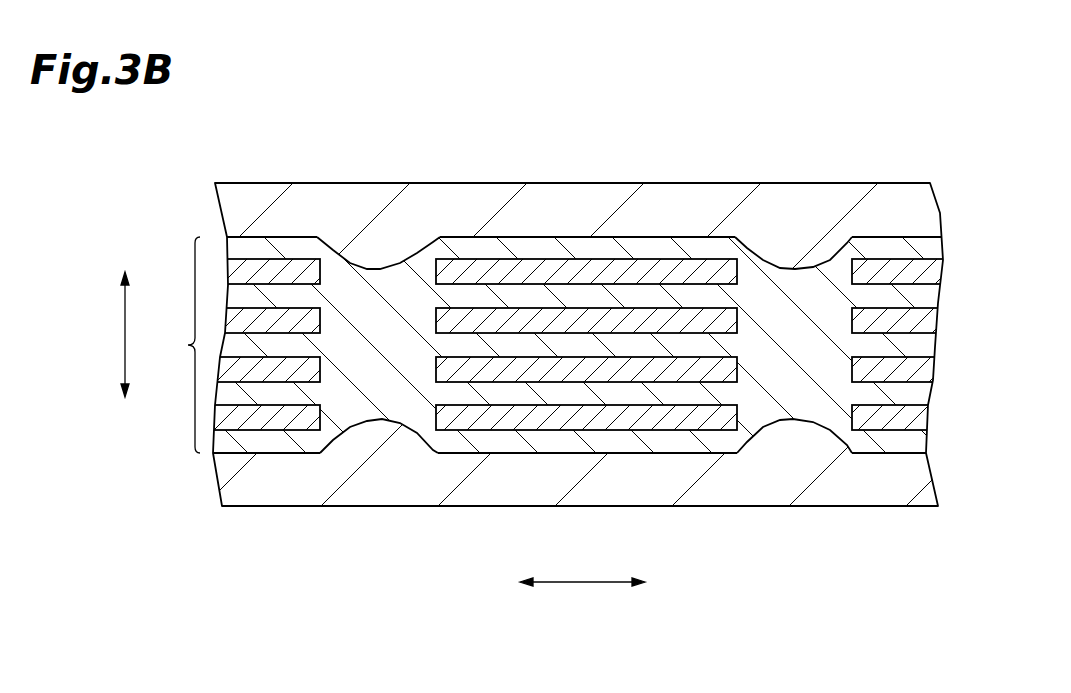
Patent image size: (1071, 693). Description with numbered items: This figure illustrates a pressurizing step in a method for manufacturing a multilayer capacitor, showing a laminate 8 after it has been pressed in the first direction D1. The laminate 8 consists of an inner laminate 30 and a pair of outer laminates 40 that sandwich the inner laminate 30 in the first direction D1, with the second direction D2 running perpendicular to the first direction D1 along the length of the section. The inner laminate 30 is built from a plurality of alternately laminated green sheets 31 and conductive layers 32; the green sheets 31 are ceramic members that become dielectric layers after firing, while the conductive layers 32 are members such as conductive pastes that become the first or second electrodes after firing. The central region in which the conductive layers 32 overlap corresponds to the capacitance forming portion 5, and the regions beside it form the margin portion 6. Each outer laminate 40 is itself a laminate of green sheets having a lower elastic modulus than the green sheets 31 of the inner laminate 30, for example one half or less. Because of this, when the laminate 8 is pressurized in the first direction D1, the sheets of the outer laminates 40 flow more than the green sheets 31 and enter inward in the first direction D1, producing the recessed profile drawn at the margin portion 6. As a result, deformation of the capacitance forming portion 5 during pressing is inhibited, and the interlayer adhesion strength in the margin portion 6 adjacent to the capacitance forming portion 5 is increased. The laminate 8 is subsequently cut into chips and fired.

The laminate 8 is at (855, 153).
The outer laminate 40 is at (253, 198).
The capacitance forming portion 5 is at (471, 236).
The margin portion 6 is at (388, 268).
The inner laminate 30 is at (176, 345).
The green sheet 31 is at (587, 250).
The conductive layer 32 is at (705, 268).
The first direction D1 is at (122, 330).
The second direction D2 is at (584, 590).